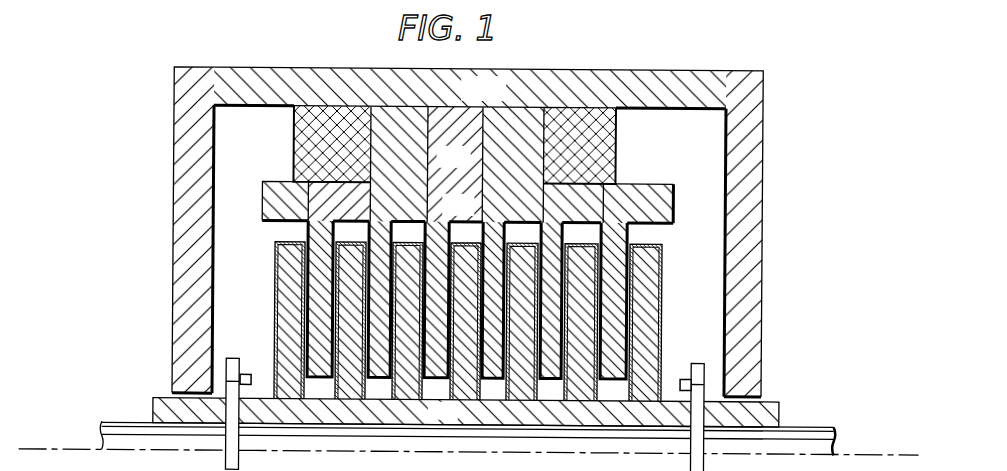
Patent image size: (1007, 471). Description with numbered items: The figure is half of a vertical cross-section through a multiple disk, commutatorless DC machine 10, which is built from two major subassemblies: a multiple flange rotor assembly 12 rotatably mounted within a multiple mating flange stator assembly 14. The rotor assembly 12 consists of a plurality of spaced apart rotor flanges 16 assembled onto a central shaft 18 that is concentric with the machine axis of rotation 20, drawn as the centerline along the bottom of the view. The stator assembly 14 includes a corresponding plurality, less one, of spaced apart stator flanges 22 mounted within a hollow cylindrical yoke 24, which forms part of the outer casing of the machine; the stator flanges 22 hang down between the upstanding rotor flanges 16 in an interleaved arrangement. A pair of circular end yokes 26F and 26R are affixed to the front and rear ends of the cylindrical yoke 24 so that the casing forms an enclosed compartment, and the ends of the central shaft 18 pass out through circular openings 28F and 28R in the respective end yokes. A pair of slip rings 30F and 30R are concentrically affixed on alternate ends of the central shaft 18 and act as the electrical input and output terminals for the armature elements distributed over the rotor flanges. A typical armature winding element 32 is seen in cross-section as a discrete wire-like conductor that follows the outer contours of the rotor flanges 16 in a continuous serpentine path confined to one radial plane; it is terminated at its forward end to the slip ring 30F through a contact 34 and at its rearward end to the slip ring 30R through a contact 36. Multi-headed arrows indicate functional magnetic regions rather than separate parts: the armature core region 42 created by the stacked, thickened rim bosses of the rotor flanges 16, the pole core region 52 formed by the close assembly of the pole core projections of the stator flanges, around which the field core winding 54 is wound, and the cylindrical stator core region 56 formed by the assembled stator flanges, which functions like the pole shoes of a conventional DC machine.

The DC machine 10 is at (459, 231).
The rotor assembly 12 is at (148, 405).
The stator assembly 14 is at (460, 231).
The rotor flanges 16 is at (467, 345).
The central shaft 18 is at (817, 440).
The machine axis of rotation 20 is at (62, 450).
The stator flanges 22 is at (320, 228).
The cylindrical yoke 24 is at (500, 99).
The front end yoke 26F is at (186, 150).
The rear end yoke 26R is at (750, 207).
The front circular opening 28F is at (168, 390).
The rear circular opening 28R is at (769, 391).
The front slip ring 30F is at (235, 440).
The rear slip ring 30R is at (700, 442).
The armature winding element 32 is at (277, 306).
The contact 34 is at (248, 368).
The contact 36 is at (678, 371).
The armature core region 42 is at (597, 412).
The pole core region 52 is at (535, 157).
The field core winding 54 is at (297, 151).
The stator core region 56 is at (585, 202).